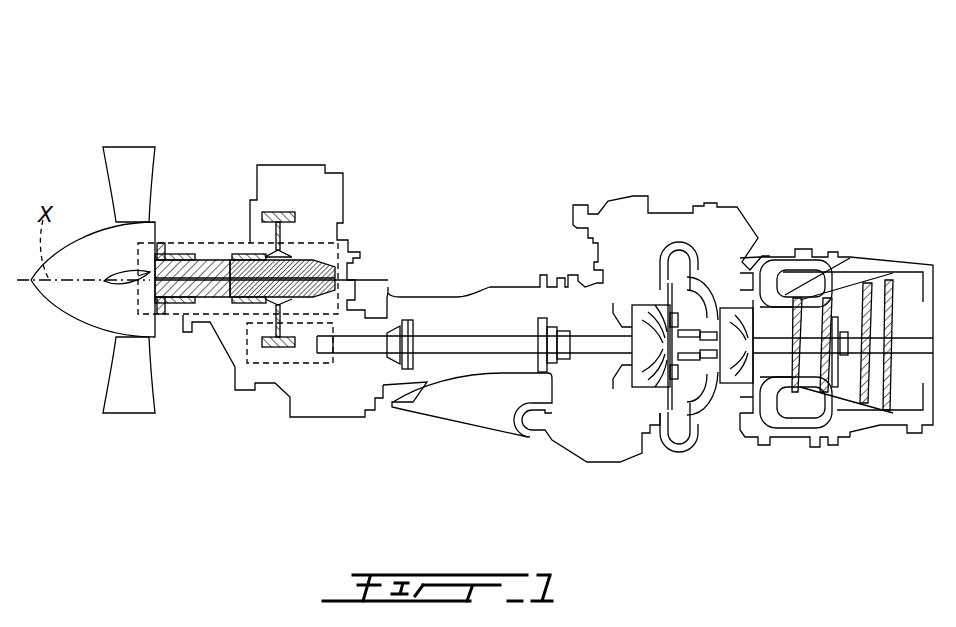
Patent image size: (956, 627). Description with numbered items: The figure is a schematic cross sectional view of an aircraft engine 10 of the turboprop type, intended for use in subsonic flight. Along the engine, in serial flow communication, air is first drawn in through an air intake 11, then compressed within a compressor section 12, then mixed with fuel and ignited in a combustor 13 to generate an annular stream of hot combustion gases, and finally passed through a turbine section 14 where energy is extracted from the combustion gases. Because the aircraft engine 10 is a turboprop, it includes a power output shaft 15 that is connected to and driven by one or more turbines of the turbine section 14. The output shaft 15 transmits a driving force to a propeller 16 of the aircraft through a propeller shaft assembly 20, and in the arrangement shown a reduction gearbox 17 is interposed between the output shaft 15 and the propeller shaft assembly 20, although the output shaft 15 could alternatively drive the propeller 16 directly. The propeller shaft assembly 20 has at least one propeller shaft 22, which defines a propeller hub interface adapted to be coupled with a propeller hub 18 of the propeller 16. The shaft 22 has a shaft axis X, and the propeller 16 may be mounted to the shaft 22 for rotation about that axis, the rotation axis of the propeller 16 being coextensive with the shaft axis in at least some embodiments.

The aircraft engine 10 is at (664, 240).
The air intake 11 is at (451, 430).
The compressor section 12 is at (605, 290).
The combustor 13 is at (777, 276).
The turbine section 14 is at (851, 308).
The power output shaft 15 is at (492, 338).
The propeller 16 is at (118, 142).
The reduction gearbox 17 is at (272, 365).
The propeller hub 18 is at (161, 227).
The propeller shaft assembly 20 is at (297, 189).
The propeller shaft 22 is at (219, 267).